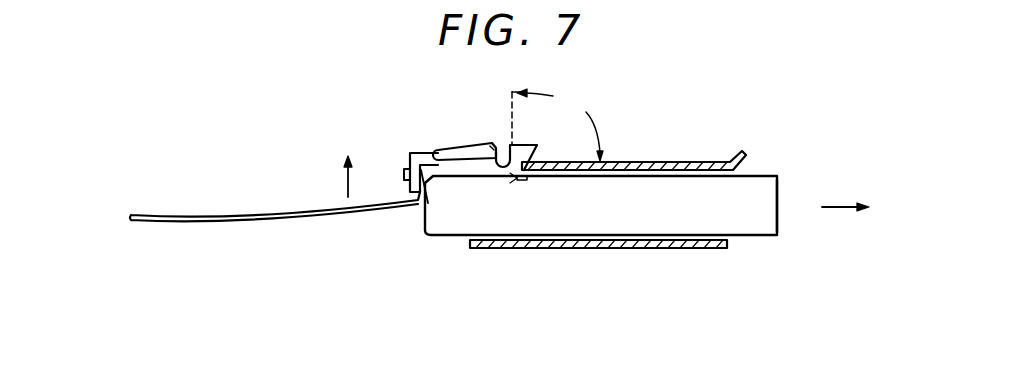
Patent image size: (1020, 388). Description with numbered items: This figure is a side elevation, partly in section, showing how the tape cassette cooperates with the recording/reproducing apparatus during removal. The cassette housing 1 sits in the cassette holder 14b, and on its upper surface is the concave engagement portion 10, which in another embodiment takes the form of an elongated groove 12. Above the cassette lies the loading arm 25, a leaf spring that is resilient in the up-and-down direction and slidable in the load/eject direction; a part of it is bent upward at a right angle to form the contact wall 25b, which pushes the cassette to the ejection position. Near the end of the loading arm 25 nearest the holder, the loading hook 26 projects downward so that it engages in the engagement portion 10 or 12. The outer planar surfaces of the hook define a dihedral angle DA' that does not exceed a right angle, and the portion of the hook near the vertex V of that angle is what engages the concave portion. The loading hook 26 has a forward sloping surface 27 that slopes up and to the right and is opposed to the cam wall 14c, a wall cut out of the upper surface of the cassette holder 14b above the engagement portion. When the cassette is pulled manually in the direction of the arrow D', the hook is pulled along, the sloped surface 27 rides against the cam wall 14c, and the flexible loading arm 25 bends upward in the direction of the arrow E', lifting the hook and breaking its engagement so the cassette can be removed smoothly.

The cassette housing 1 is at (777, 192).
The engagement portion 10 is at (599, 204).
The elongated groove 12 is at (513, 181).
The cassette holder 14b is at (625, 249).
The cam wall 14c is at (517, 181).
The loading arm 25 is at (333, 221).
The contact wall 25b is at (434, 150).
The loading hook 26 is at (508, 150).
The sloping surface 27 is at (543, 161).
The apex of tab V is at (490, 146).
The dihedral angle DA' is at (557, 122).
The upward direction arrow E' is at (348, 159).
The withdrawal direction arrow D' is at (845, 188).